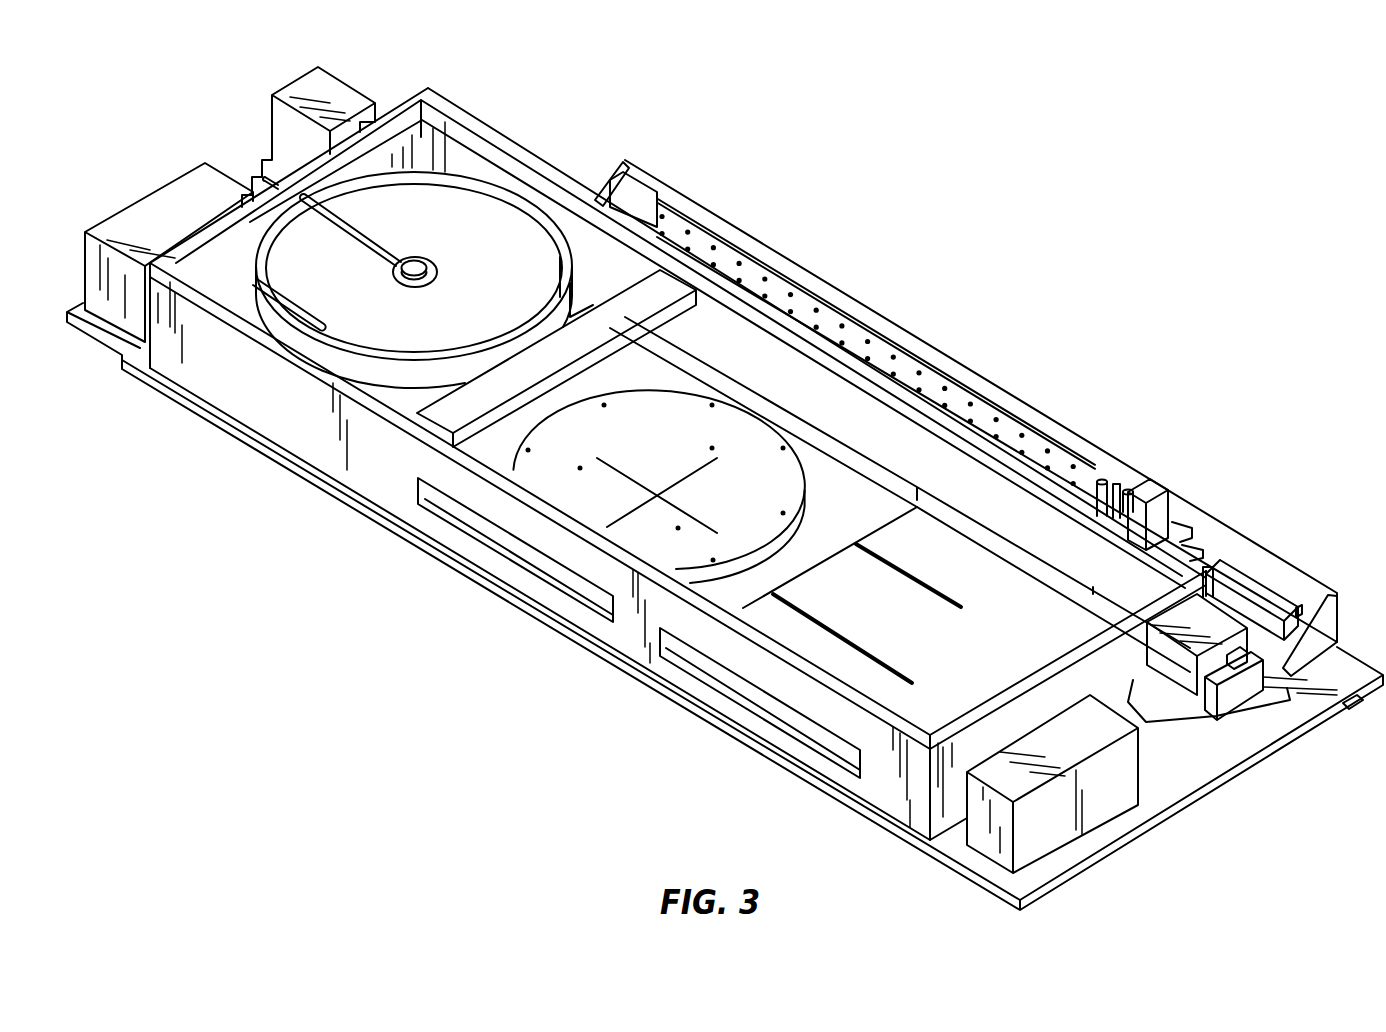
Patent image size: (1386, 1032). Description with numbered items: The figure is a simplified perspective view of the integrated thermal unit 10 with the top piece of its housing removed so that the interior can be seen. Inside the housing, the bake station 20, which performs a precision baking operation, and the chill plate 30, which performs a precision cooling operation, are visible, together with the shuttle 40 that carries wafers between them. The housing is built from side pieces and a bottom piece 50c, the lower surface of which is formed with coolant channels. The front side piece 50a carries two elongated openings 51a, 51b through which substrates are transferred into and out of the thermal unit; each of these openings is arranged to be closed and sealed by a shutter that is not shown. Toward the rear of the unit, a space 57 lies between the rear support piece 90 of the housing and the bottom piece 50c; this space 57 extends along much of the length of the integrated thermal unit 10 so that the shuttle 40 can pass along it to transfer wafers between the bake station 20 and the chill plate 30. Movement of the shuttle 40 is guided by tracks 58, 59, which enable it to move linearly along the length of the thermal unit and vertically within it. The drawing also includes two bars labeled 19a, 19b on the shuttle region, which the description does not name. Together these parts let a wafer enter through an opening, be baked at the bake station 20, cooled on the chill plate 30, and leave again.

The integrated thermal unit 10 is at (950, 129).
The first guide bar 19a is at (863, 651).
The second guide bar 19b is at (914, 572).
The bake station 20 is at (519, 284).
The chill plate 30 is at (762, 509).
The shuttle 40 is at (1039, 642).
The front side piece 50a is at (300, 397).
The bottom piece 50c is at (1364, 688).
The elongated opening 51a is at (586, 589).
The elongated opening 51b is at (840, 752).
The space 57 is at (691, 362).
The track 58 is at (962, 398).
The track 59 is at (1129, 493).
The rear support piece 90 is at (922, 464).